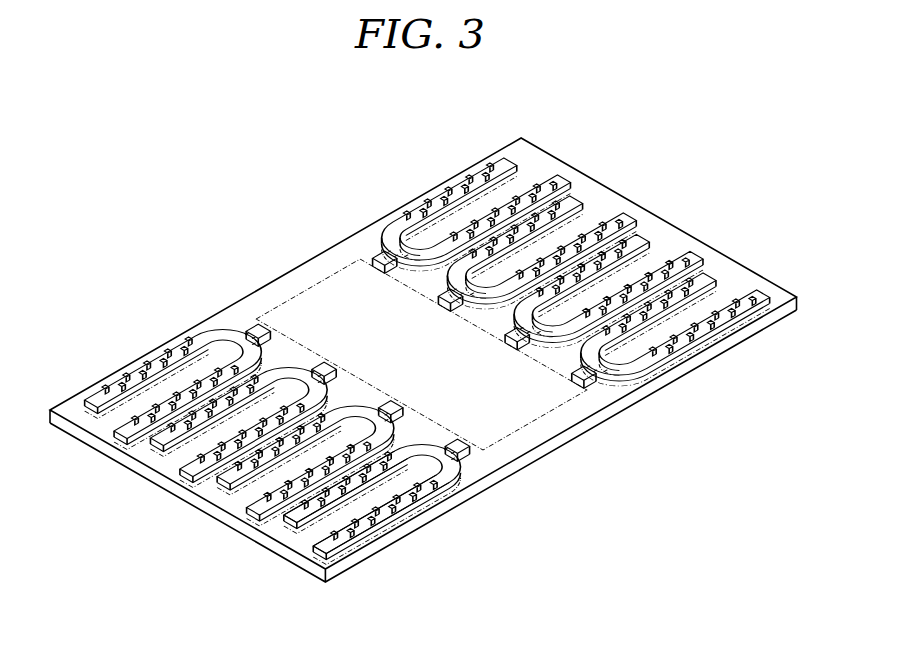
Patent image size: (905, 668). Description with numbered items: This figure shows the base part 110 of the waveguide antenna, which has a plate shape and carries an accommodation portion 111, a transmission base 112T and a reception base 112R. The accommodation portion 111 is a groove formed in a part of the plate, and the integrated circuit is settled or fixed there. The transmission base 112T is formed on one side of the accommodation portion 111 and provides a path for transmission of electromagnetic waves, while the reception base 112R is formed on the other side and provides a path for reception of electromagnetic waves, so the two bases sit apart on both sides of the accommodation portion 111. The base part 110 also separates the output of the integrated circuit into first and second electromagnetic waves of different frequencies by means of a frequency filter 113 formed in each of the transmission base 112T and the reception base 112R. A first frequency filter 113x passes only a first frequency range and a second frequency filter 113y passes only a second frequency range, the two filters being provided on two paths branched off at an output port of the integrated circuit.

The base part 110 is at (226, 177).
The accommodation portion 111 is at (421, 354).
The transmission base 112T is at (280, 438).
The reception base 112R is at (560, 276).
The frequency filter 113 is at (380, 495).
The first frequency filter 113x is at (346, 487).
The second frequency filter 113y is at (381, 514).